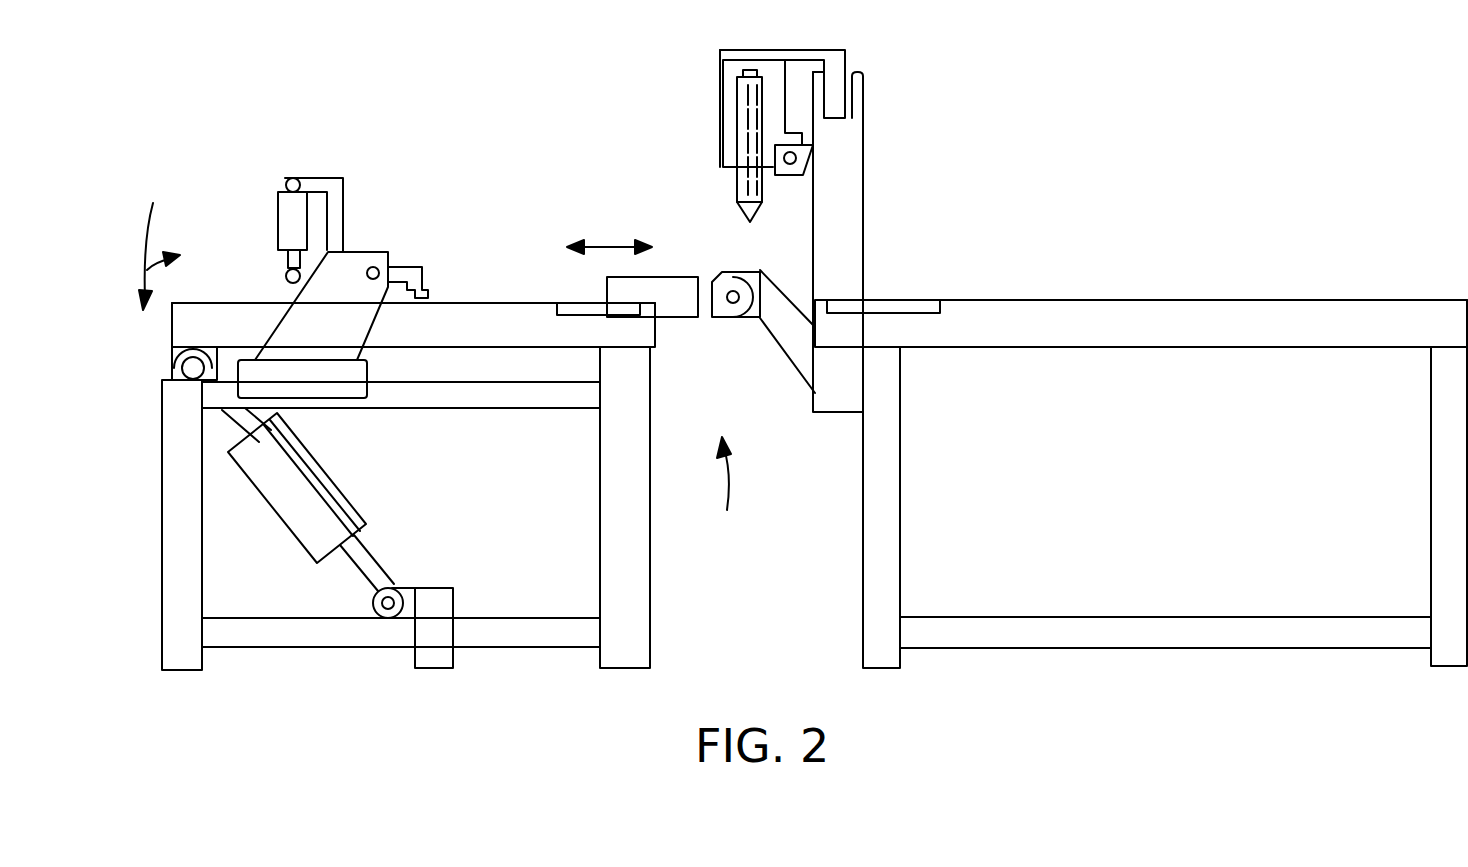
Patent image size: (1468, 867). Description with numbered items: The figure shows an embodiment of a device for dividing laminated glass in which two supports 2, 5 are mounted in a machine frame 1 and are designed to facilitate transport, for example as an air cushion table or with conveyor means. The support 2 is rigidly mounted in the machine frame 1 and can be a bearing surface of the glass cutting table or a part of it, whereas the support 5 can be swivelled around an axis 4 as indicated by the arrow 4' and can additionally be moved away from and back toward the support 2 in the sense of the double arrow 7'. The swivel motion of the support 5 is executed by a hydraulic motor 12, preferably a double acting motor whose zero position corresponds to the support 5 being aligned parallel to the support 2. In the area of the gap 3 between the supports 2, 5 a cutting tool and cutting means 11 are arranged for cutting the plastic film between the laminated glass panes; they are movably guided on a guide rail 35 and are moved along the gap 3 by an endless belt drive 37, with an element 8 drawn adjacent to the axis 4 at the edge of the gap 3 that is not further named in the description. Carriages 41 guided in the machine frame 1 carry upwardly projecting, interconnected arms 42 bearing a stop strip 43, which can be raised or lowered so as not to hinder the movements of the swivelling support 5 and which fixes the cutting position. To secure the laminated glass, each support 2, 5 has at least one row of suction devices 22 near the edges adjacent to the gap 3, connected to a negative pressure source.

The machine frame 1 is at (612, 500).
The support 2 is at (1302, 322).
The gap 3 is at (727, 494).
The axis 4 is at (725, 326).
The arrow 4' is at (159, 240).
The support 5 is at (473, 330).
The double arrow 7' is at (609, 217).
The support arm 8 is at (793, 335).
The cutting means 11 is at (745, 156).
The hydraulic motor 12 is at (325, 504).
The suction devices 22 is at (583, 312).
The guide rail 35 is at (778, 147).
The endless belt drive 37 is at (838, 63).
The carriages 41 is at (327, 392).
The arms 42 is at (325, 312).
The stop strip 43 is at (433, 278).